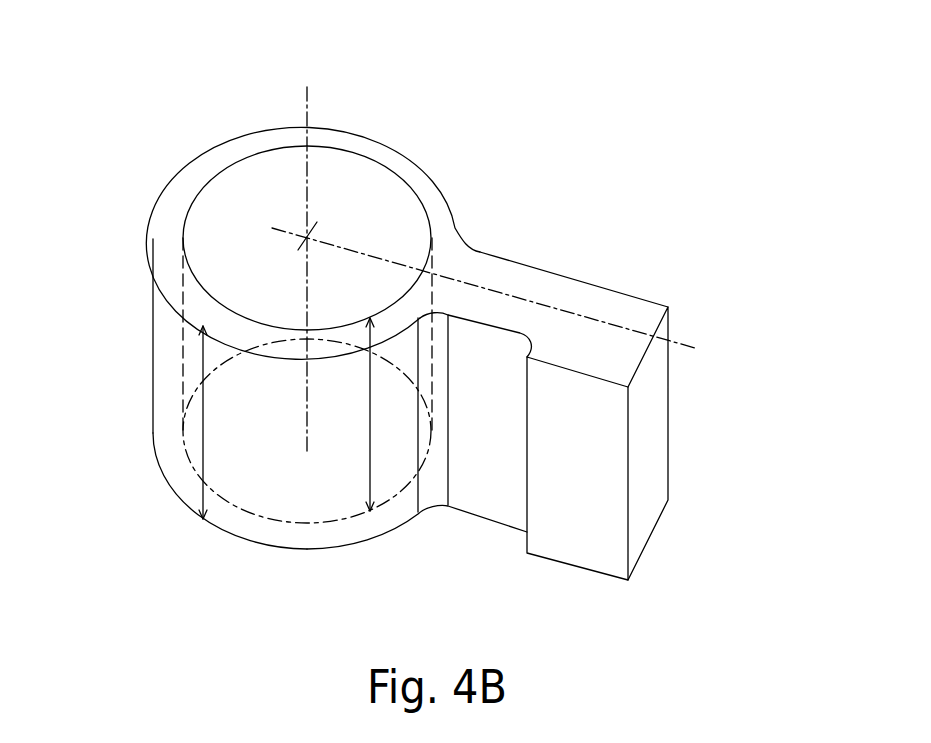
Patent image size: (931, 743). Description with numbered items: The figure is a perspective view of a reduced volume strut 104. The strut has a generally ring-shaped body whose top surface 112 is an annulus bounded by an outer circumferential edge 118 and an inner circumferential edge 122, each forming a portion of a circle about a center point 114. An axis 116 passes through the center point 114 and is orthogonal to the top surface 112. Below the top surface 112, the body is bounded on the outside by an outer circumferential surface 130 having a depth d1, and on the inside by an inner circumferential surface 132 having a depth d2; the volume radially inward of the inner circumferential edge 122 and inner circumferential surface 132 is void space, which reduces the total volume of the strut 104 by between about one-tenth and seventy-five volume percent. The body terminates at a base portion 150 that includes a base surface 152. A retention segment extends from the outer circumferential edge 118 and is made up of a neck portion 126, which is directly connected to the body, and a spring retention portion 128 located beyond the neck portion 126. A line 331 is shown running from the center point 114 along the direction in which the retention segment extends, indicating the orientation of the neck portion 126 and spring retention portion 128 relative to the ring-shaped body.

The strut 104 is at (130, 137).
The top surface 112 is at (273, 140).
The center point 114 is at (303, 237).
The axis 116 is at (308, 103).
The outer circumferential edge 118 is at (230, 138).
The inner circumferential edge 122 is at (197, 205).
The neck portion 126 is at (487, 328).
The spring retention portion 128 is at (574, 368).
The outer circumferential surface 130 is at (163, 383).
The inner circumferential surface 132 is at (365, 193).
The base portion 150 is at (208, 537).
The base surface 152 is at (377, 535).
The arm axis 331 is at (678, 340).
The depth of outer circumferential surface d1 is at (203, 463).
The depth of inner circumferential surface d2 is at (370, 470).